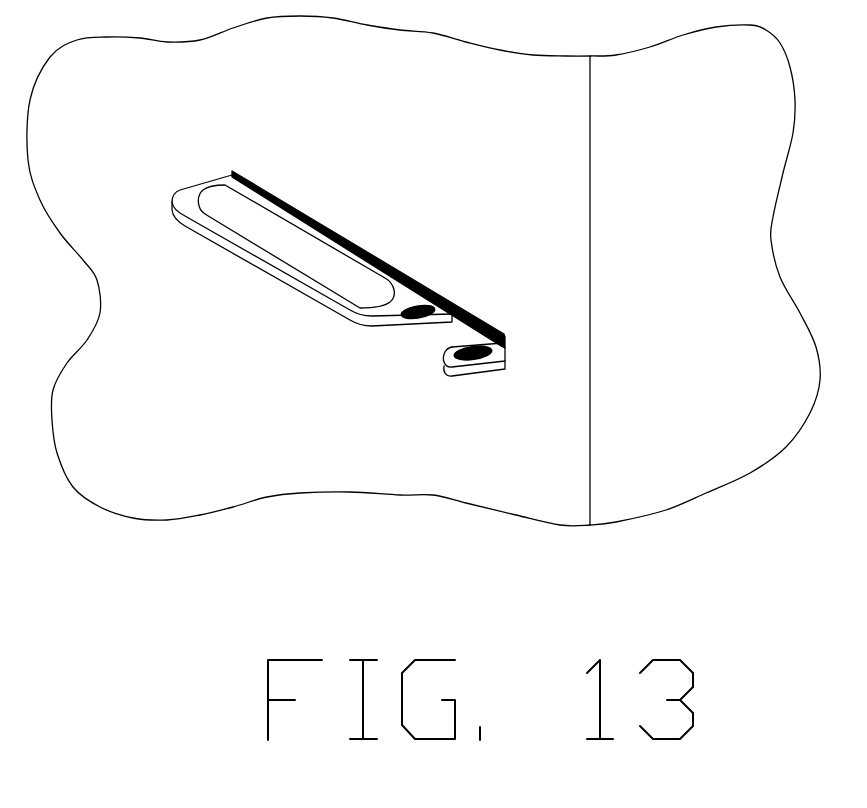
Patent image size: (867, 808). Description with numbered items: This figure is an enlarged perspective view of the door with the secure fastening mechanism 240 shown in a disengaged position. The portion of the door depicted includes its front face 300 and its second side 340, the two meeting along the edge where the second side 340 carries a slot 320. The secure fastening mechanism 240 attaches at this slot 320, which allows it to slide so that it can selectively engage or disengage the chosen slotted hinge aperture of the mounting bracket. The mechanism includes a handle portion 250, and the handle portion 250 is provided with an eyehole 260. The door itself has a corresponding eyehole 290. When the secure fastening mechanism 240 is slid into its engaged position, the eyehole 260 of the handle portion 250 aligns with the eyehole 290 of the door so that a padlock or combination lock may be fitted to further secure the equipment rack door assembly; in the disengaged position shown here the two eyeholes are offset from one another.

The front face 300 is at (449, 96).
The secure fastening mechanism 240 is at (388, 263).
The handle portion 250 is at (230, 210).
The eyehole 260 is at (385, 316).
The eyehole 290 is at (445, 360).
The slot 320 is at (477, 316).
The second side 340 is at (613, 397).